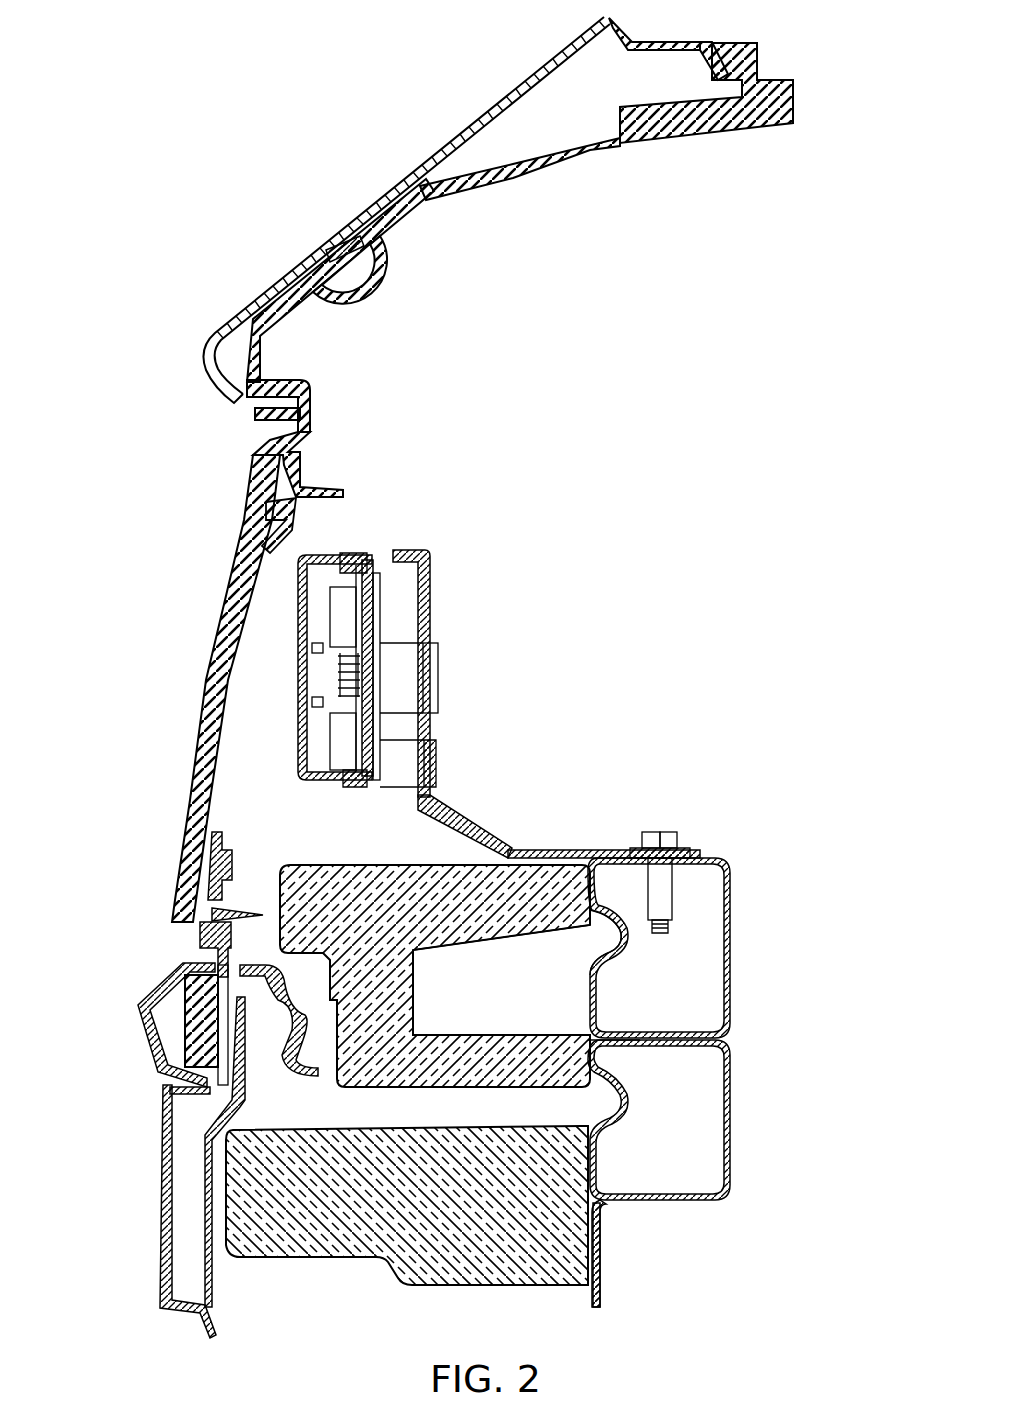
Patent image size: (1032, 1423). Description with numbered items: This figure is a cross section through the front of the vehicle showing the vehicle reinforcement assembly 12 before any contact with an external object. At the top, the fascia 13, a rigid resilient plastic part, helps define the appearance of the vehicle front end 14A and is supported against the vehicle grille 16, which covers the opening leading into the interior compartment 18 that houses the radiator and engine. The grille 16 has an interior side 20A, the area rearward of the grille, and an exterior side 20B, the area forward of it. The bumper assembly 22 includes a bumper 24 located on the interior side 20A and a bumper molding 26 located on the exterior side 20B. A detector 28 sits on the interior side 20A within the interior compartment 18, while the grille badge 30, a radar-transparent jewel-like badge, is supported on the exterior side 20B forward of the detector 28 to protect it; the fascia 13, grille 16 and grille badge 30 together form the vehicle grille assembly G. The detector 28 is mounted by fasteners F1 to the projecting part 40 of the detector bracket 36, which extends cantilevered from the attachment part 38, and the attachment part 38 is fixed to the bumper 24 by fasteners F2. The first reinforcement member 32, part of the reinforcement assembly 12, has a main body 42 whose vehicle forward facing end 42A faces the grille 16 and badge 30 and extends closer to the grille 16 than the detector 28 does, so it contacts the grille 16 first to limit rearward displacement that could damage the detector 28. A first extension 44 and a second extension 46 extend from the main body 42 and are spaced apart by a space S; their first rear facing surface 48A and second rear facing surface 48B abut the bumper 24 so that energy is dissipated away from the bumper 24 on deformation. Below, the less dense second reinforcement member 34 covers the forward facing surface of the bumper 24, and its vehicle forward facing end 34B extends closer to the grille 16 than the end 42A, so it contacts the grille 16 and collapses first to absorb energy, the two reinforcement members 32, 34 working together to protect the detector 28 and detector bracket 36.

The vehicle reinforcement assembly 12 is at (613, 577).
The fascia 13 is at (395, 180).
The vehicle front end 14A is at (174, 716).
The vehicle grille 16 is at (240, 527).
The interior compartment 18 is at (571, 333).
The interior side 20A is at (841, 188).
The exterior side 20B is at (152, 413).
The bumper assembly 22 is at (471, 1102).
The bumper 24 is at (682, 1029).
The bumper molding 26 is at (165, 1152).
The detector 28 is at (359, 554).
The grille badge 30 is at (200, 690).
The first reinforcement member 32 is at (411, 948).
The second reinforcement member 34 is at (313, 1257).
The vehicle forward facing end 34B is at (225, 1205).
The detector bracket 36 is at (434, 566).
The attachment part 38 is at (533, 848).
The projecting part 40 is at (426, 793).
The main body 42 is at (318, 864).
The vehicle forward facing end 42A is at (278, 888).
The first extension 44 is at (513, 943).
The second extension 46 is at (498, 1033).
The first rear facing surface 48A is at (620, 957).
The second rear facing surface 48B is at (600, 1033).
The fasteners F1 is at (440, 677).
The fasteners F2 is at (668, 832).
The vehicle grille assembly G is at (156, 955).
The space S is at (443, 990).